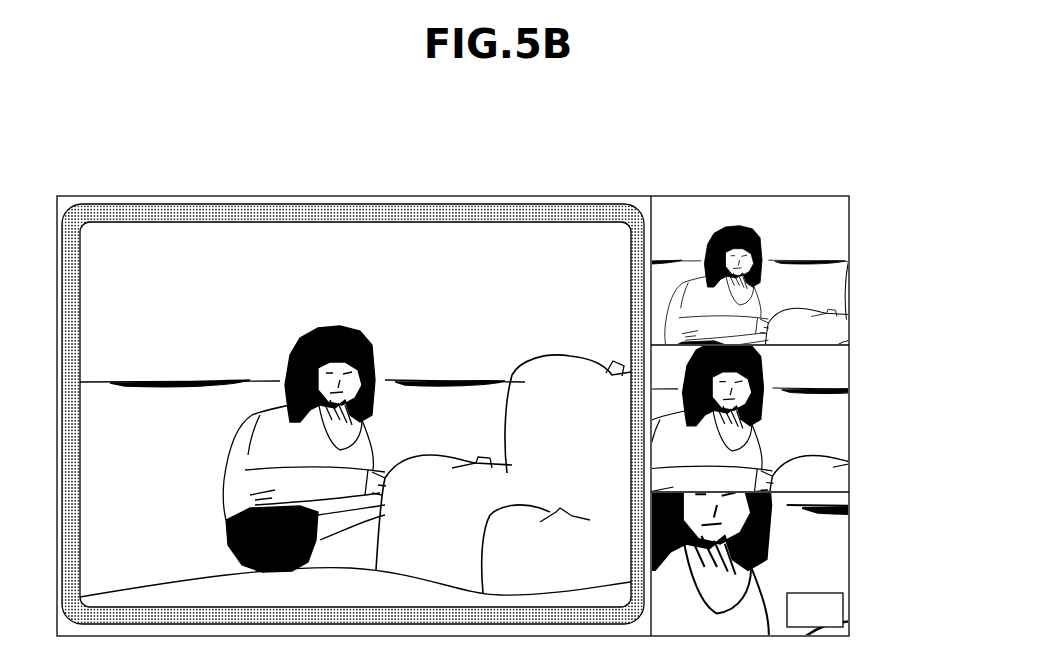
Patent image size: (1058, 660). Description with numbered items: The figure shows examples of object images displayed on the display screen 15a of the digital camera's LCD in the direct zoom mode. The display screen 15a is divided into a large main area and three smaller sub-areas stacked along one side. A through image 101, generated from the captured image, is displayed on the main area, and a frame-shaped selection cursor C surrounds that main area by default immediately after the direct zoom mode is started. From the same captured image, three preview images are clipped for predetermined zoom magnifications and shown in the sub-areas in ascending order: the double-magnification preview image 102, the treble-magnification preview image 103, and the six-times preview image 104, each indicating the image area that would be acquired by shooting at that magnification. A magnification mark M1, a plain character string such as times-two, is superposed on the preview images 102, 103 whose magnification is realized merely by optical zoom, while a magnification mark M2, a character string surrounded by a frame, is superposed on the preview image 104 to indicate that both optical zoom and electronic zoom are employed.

The display screen 15a is at (558, 190).
The through image 101 is at (262, 240).
The selection cursor C is at (410, 208).
The preview image 102 is at (828, 228).
The preview image 103 is at (828, 415).
The preview image 104 is at (828, 527).
The magnification mark M1 is at (848, 318).
The magnification mark M2 is at (824, 597).